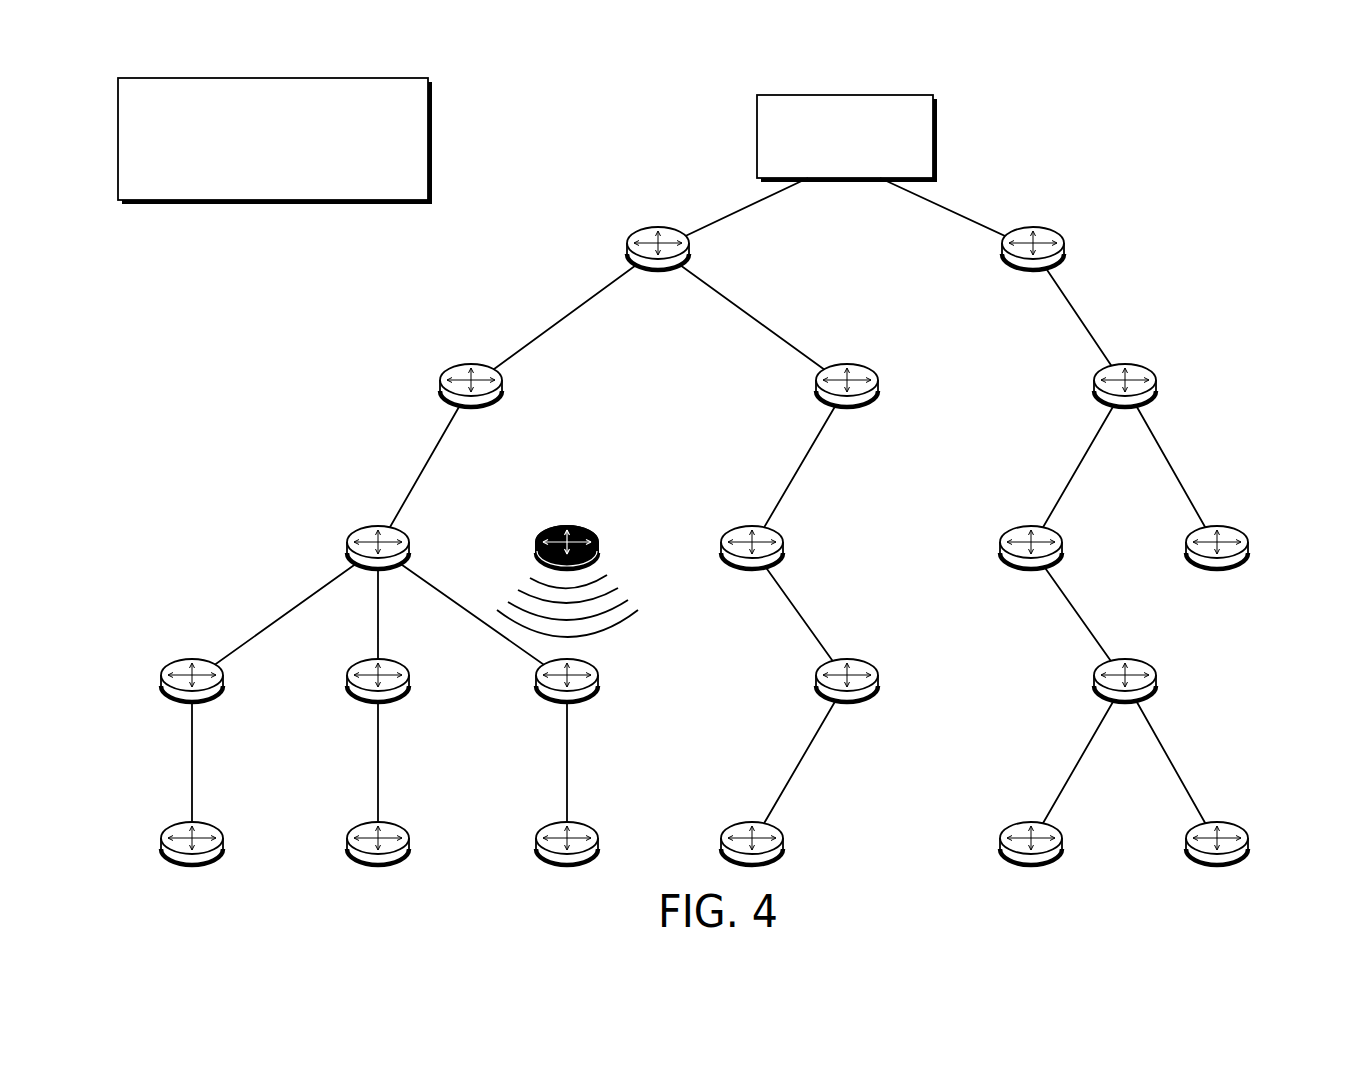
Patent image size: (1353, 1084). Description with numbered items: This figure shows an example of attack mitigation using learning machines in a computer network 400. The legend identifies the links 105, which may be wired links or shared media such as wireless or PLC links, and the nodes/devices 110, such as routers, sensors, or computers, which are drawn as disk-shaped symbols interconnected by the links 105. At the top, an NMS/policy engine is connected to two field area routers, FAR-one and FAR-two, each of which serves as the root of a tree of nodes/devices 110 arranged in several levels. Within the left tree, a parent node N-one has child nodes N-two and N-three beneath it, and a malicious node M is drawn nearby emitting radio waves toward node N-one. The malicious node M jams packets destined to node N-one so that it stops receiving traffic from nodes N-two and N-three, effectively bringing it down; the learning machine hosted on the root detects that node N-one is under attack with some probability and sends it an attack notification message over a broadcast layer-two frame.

The links 105 is at (152, 109).
The nodes/devices 110 is at (704, 499).
The attack mitigation example 400 is at (1213, 141).